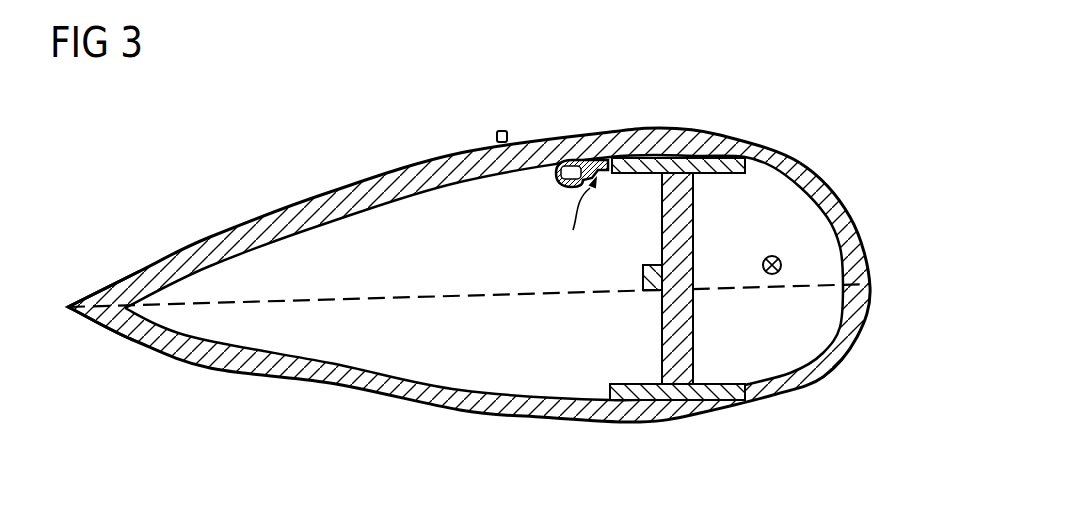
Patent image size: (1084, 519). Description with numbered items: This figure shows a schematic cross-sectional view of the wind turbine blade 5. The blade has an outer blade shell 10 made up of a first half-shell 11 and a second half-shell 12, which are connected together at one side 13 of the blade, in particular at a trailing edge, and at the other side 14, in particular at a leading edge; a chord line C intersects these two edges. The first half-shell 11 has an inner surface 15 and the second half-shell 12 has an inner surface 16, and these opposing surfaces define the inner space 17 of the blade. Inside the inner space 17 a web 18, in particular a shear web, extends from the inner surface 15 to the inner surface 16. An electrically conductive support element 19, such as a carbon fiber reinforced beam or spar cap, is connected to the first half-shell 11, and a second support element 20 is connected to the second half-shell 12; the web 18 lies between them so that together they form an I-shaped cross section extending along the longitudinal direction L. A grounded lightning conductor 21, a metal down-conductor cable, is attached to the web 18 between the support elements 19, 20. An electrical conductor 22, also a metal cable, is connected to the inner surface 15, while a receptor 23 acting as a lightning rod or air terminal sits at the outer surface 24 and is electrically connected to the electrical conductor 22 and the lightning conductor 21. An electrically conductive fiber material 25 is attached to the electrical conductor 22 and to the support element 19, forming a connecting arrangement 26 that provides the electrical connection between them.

The wind turbine blade 5 is at (325, 98).
The outer blade shell 10 is at (195, 232).
The first half-shell 11 is at (467, 163).
The second half-shell 12 is at (288, 378).
The one side of the wind turbine blade 13 is at (68, 307).
The other side of the wind turbine blade 14 is at (870, 283).
The inner surface of the first half-shell 15 is at (333, 227).
The inner surface of the second half-shell 16 is at (390, 380).
The inner space 17 is at (454, 282).
The web 18 is at (668, 322).
The support element 19 is at (720, 160).
The support element 20 is at (715, 402).
The lightning conductor 21 is at (647, 265).
The electrical conductor 22 is at (557, 175).
The receptor 23 is at (502, 131).
The outer surface 24 is at (383, 168).
The fiber material 25 is at (582, 157).
The connecting arrangement 26 is at (566, 215).
The chord line C is at (272, 303).
The longitudinal direction L is at (765, 258).